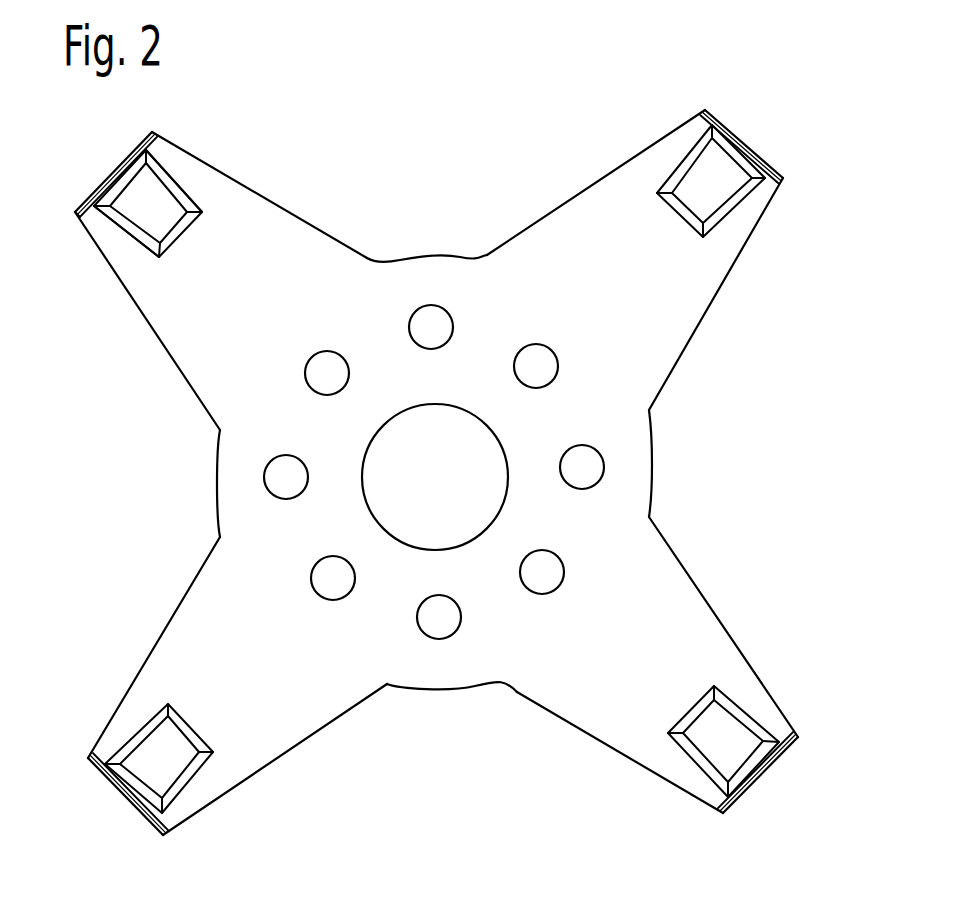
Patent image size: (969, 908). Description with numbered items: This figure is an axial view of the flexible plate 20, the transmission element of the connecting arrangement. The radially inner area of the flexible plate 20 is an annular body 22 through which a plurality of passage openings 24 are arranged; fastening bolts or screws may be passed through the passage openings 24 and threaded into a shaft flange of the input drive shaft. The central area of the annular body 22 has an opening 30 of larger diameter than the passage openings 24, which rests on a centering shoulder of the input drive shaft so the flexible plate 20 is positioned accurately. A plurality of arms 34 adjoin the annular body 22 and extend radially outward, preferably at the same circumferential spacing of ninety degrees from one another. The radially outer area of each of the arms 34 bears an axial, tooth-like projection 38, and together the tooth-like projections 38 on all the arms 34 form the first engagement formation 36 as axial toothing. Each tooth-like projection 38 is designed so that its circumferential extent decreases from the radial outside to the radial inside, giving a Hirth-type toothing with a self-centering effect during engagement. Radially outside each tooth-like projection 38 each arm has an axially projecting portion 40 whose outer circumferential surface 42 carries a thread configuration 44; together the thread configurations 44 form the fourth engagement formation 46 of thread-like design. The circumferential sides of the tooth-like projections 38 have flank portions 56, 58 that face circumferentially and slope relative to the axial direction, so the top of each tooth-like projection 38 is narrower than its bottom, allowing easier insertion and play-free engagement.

The flexible plate 20 is at (451, 472).
The annular body 22 is at (640, 482).
The passage openings 24 is at (436, 317).
The opening 30 is at (393, 478).
The arms 34 is at (190, 345).
The first engagement formation 36 is at (207, 191).
The tooth-like projection 38 is at (132, 210).
The axially projecting portion 40 is at (100, 175).
The outer circumferential surface 42 is at (117, 165).
The thread configuration 44 is at (143, 132).
The fourth engagement formation 46 is at (60, 216).
The flank portion 56 is at (140, 240).
The flank portion 58 is at (182, 190).